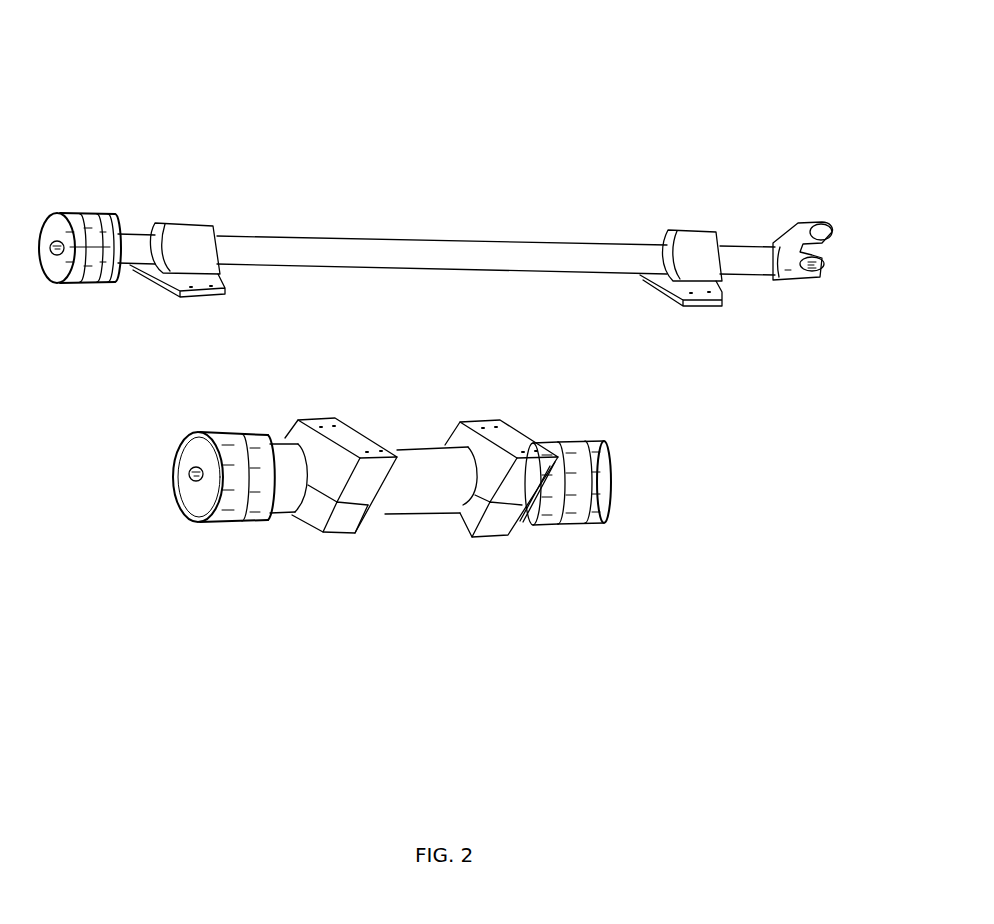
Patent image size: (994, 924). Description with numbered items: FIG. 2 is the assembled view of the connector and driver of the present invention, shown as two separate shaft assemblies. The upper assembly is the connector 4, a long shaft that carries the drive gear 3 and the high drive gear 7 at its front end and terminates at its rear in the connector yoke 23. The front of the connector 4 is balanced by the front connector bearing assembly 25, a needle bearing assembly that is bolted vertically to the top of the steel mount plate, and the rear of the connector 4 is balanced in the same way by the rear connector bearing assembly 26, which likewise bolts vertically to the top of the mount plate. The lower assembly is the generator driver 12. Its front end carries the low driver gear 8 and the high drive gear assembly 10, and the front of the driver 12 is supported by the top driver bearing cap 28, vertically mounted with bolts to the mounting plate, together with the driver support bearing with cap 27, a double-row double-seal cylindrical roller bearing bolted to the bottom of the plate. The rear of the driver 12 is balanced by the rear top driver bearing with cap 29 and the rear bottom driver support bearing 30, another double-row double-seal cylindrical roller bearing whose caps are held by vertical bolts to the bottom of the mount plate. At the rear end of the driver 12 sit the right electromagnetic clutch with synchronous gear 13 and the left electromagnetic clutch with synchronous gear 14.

The drive gear 3 is at (58, 212).
The high drive gear 7 is at (100, 212).
The connector 4 is at (460, 240).
The front connector bearing assembly 25 is at (190, 224).
The rear connector bearing assembly 26 is at (693, 230).
The connector yoke 23 is at (797, 223).
The low driver gear 8 is at (218, 527).
The high drive gear assembly 10 is at (247, 527).
The top driver bearing cap 28 is at (308, 533).
The driver support bearing with cap 27 is at (380, 470).
The generator driver 12 is at (430, 512).
The rear top driver bearing with cap 29 is at (497, 535).
The rear bottom driver support bearing 30 is at (522, 497).
The right electromagnetic clutch with synchronous gear 13 is at (557, 527).
The left electromagnetic clutch with synchronous gear 14 is at (583, 523).